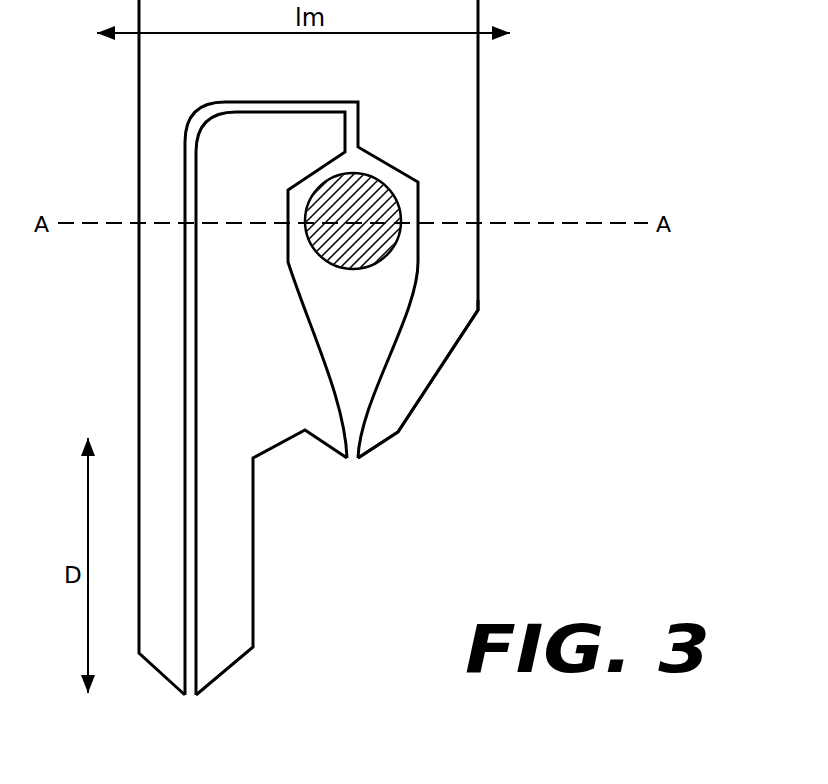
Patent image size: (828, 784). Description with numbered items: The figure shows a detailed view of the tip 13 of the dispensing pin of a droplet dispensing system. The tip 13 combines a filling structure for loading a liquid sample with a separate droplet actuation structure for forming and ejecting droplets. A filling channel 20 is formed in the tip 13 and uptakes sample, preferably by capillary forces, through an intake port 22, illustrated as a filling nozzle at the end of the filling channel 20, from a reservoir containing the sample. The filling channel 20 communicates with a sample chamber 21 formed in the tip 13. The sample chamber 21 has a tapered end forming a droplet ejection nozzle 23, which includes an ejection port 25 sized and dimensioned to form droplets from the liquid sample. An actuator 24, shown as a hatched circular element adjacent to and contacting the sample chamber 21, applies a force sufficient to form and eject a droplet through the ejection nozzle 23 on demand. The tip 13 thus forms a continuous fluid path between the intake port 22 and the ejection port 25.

The tip 13 is at (540, 119).
The filling channel 20 is at (195, 593).
The sample chamber 21 is at (360, 299).
The intake port 22 is at (202, 703).
The droplet ejection nozzle 23 is at (421, 433).
The actuator 24 is at (399, 206).
The ejection port 25 is at (353, 462).